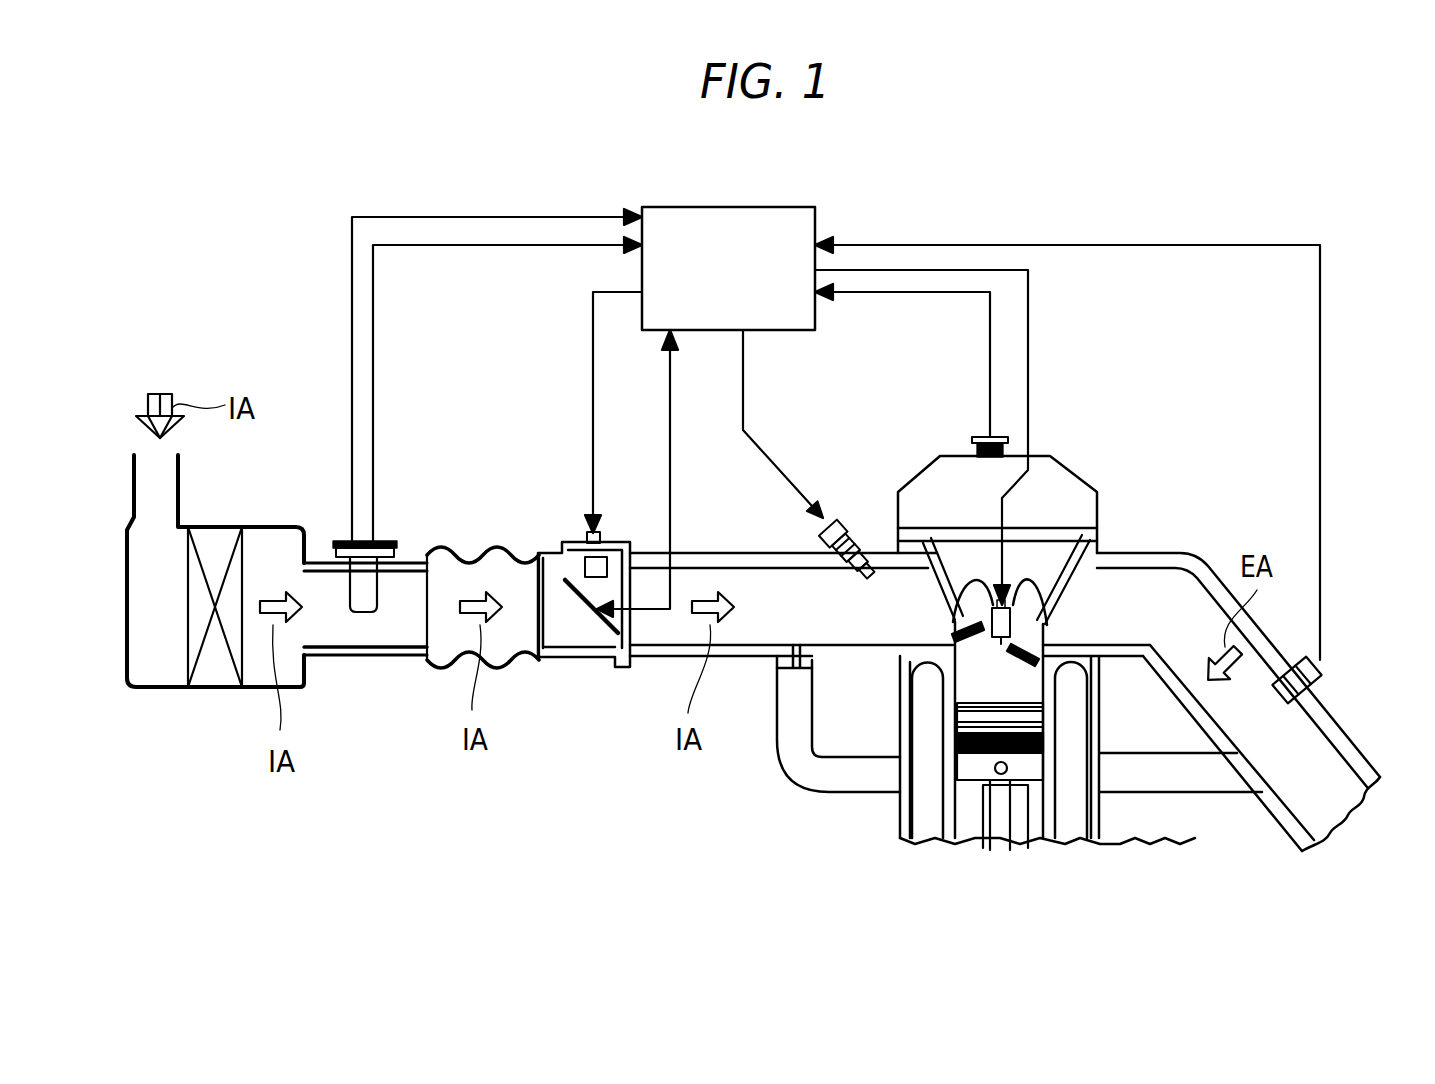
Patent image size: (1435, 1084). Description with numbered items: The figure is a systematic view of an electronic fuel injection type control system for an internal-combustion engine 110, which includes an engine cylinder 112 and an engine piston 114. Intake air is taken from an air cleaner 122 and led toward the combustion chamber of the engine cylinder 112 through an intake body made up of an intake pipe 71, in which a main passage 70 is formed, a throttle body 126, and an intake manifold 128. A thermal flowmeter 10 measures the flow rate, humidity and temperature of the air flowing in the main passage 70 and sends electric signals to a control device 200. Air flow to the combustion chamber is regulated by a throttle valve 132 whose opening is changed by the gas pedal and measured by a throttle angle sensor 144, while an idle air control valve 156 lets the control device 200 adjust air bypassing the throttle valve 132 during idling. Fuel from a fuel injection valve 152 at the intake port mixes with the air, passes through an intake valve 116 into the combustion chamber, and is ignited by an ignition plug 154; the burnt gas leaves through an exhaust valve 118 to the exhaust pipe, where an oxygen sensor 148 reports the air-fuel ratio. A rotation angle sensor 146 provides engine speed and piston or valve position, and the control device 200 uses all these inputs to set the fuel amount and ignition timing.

The control device 200 is at (780, 202).
The thermal flowmeter 10 is at (397, 540).
The main passage 70 is at (327, 588).
The intake pipe 71 is at (372, 656).
The air cleaner 122 is at (220, 687).
The throttle body 126 is at (572, 660).
The throttle valve 132 is at (612, 605).
The throttle angle sensor 144 is at (608, 572).
The idle air control valve 156 is at (588, 532).
The intake manifold 128 is at (748, 645).
The fuel injection valve 152 is at (828, 513).
The intake valve 116 is at (923, 532).
The rotation angle sensor 146 is at (972, 438).
The exhaust valve 118 is at (1110, 535).
The oxygen sensor 148 is at (1320, 667).
The ignition plug 154 is at (1000, 648).
The engine cylinder 112 is at (1000, 687).
The engine piston 114 is at (1020, 767).
The internal-combustion engine 110 is at (1082, 838).